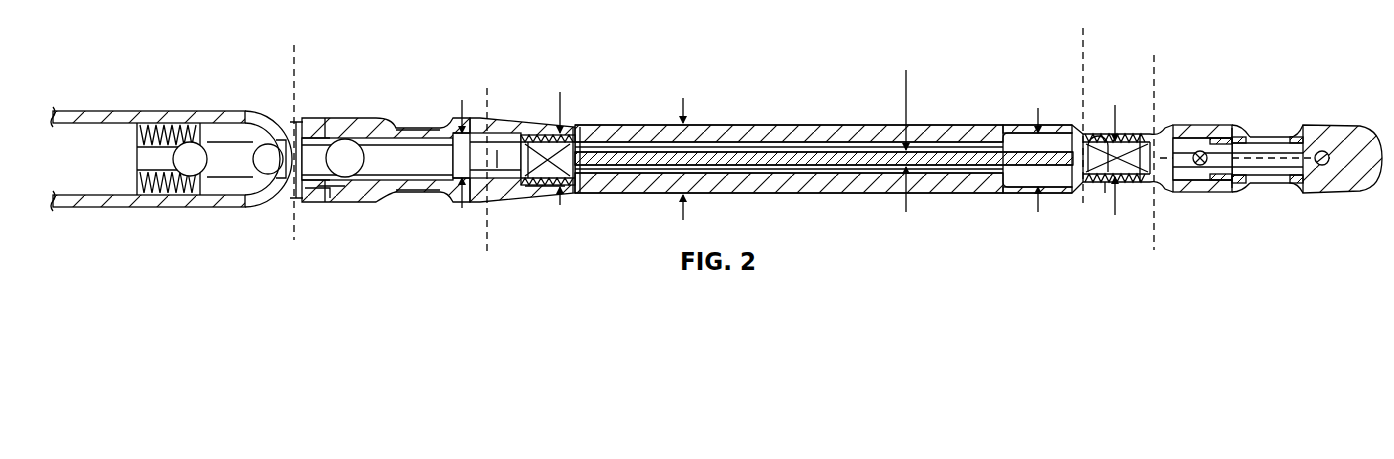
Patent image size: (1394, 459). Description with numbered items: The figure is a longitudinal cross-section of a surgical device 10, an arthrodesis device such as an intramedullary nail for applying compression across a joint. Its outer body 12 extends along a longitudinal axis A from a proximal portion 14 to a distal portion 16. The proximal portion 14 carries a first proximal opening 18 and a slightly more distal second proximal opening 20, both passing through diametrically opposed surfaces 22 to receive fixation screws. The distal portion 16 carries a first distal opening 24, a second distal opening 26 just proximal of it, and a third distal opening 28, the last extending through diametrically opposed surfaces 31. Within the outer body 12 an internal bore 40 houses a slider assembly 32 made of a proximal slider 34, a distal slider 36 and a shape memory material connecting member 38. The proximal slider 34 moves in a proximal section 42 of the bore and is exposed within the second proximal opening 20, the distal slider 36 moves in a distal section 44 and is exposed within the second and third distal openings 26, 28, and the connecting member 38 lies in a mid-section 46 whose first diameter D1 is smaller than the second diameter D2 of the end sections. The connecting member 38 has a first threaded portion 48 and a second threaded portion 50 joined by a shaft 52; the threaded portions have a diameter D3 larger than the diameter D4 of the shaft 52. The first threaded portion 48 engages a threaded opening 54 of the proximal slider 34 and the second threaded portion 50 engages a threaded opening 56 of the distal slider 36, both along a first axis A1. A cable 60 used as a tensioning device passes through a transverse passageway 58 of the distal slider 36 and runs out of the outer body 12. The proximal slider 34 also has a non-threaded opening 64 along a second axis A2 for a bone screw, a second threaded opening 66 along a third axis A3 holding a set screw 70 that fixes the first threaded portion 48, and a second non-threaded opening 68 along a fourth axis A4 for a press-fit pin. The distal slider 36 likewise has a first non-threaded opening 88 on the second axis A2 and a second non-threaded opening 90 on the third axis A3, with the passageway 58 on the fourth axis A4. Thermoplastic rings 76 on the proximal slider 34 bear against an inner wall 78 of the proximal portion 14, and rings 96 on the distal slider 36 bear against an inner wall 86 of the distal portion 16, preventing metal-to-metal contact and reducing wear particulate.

The surgical device 10 is at (944, 18).
The outer body 12 is at (757, 128).
The proximal portion 14 is at (1250, 238).
The distal portion 16 is at (283, 200).
The first proximal opening 18 is at (1268, 137).
The second proximal opening 20 is at (1095, 140).
The diametrically opposed surfaces 22 is at (1212, 138).
The first distal opening 24 is at (188, 165).
The second distal opening 26 is at (267, 150).
The third distal opening 28 is at (418, 128).
The diametrically opposed surfaces 31 is at (335, 125).
The slider assembly 32 is at (746, 170).
The proximal slider 34 is at (1100, 184).
The distal slider 36 is at (540, 190).
The shape memory material connecting member 38 is at (844, 156).
The internal bore 40 is at (765, 134).
The proximal section 42 is at (1120, 140).
The distal section 44 is at (485, 140).
The mid-section 46 is at (800, 148).
The first threaded portion 48 is at (1128, 177).
The second threaded portion 50 is at (548, 186).
The shaft 52 is at (805, 188).
The threaded opening 54 is at (1074, 180).
The threaded opening 56 is at (582, 130).
The transverse passageway 58 is at (312, 192).
The cable 60 is at (82, 113).
The non-threaded opening 64 is at (1185, 194).
The second threaded opening 66 is at (1035, 182).
The second non-threaded opening 68 is at (1199, 151).
The set screw 70 is at (1088, 142).
The ring 76 is at (1120, 186).
The inner wall 78 is at (1222, 128).
The inner wall 86 is at (316, 120).
The first non-threaded opening 88 is at (510, 135).
The second non-threaded opening 90 is at (347, 154).
The ring 96 is at (320, 194).
The longitudinal axis A is at (1378, 12).
The first axis A1 is at (462, 212).
The second axis A2 is at (490, 228).
The third axis A3 is at (1088, 46).
The fourth axis A4 is at (292, 50).
The first diameter D1 is at (686, 100).
The second diameter D2 is at (455, 200).
The diameter D3 is at (562, 92).
The diameter D4 is at (908, 78).